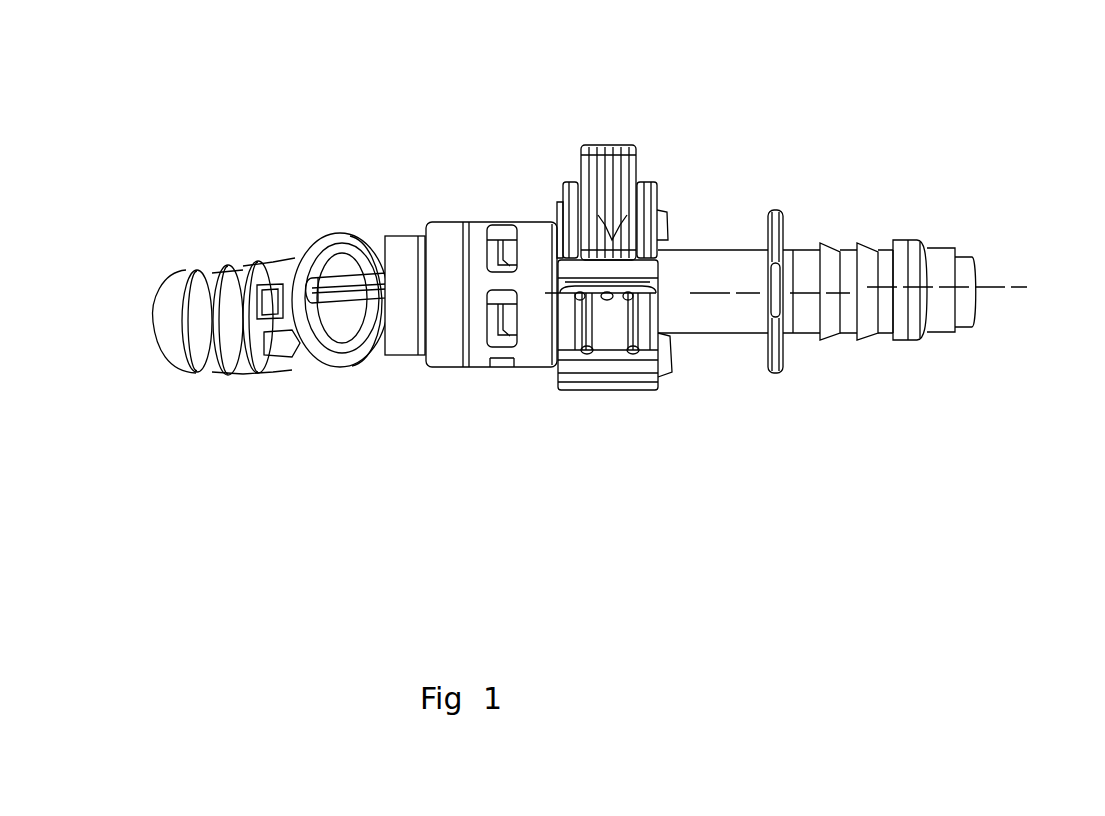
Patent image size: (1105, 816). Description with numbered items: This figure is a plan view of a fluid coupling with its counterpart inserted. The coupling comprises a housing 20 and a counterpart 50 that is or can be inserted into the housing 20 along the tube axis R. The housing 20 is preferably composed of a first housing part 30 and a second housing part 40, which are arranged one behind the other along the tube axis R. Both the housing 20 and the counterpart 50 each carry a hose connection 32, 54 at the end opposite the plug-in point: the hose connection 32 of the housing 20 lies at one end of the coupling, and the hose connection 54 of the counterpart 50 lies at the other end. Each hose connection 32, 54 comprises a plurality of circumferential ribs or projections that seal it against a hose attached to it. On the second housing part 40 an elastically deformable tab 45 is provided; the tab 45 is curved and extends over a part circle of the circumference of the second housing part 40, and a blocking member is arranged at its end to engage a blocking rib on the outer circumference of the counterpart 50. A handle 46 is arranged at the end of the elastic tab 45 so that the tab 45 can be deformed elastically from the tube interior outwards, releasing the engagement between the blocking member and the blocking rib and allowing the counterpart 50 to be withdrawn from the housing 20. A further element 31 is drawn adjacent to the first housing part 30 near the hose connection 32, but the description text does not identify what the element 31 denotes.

The housing 20 is at (352, 432).
The first housing part 30 is at (402, 258).
The pin 31 is at (345, 265).
The hose connection 32 is at (212, 281).
The second housing part 40 is at (530, 243).
The elastically deformable tab 45 is at (610, 332).
The handle 46 is at (610, 165).
The counterpart 50 is at (765, 200).
The hose connection 54 is at (885, 268).
The tube axis R is at (997, 277).